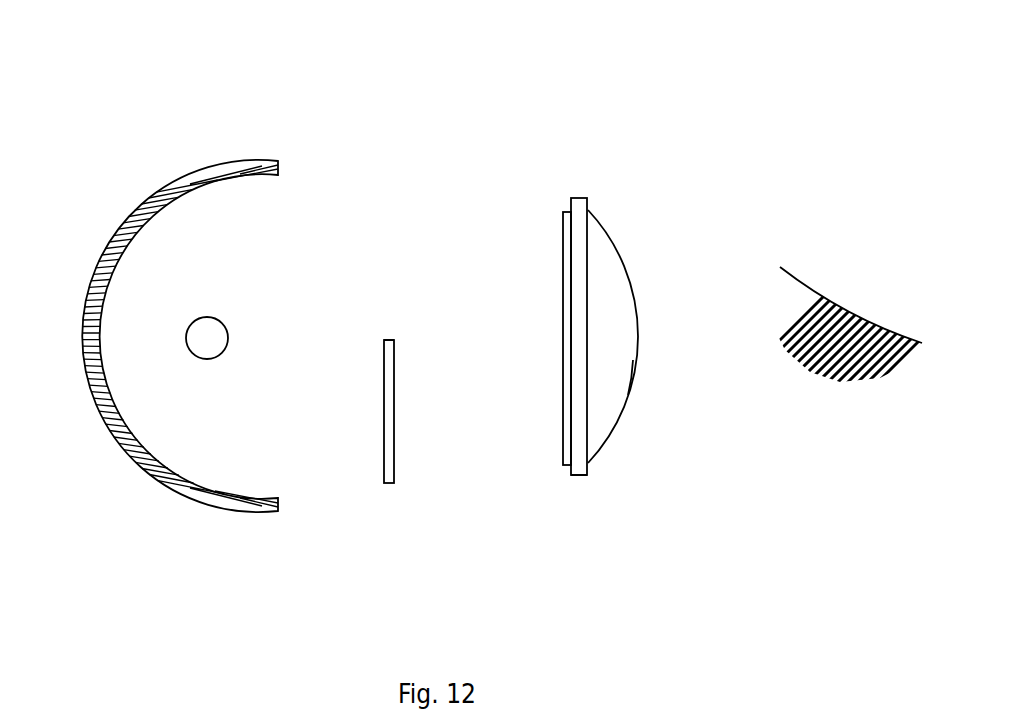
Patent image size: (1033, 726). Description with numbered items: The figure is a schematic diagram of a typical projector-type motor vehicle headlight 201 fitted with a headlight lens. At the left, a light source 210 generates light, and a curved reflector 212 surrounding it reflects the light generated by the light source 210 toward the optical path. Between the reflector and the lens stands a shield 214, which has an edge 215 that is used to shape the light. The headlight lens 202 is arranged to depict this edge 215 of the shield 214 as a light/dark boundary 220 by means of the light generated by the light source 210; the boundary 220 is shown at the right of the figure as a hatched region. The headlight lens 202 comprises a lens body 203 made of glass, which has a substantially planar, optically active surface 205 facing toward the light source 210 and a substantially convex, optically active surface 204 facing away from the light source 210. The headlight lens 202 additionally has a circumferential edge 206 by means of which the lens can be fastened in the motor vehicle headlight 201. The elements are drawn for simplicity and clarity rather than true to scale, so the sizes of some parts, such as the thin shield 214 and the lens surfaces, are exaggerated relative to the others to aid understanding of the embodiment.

The motor vehicle headlight 201 is at (540, 98).
The headlight lens 202 is at (586, 198).
The lens body 203 is at (603, 292).
The convex surface 204 is at (632, 378).
The planar surface 205 is at (563, 235).
The edge 206 is at (580, 472).
The light source 210 is at (207, 340).
The reflector 212 is at (202, 190).
The shield 214 is at (388, 453).
The edge of the shield 215 is at (389, 343).
The light/dark boundary 220 is at (832, 300).